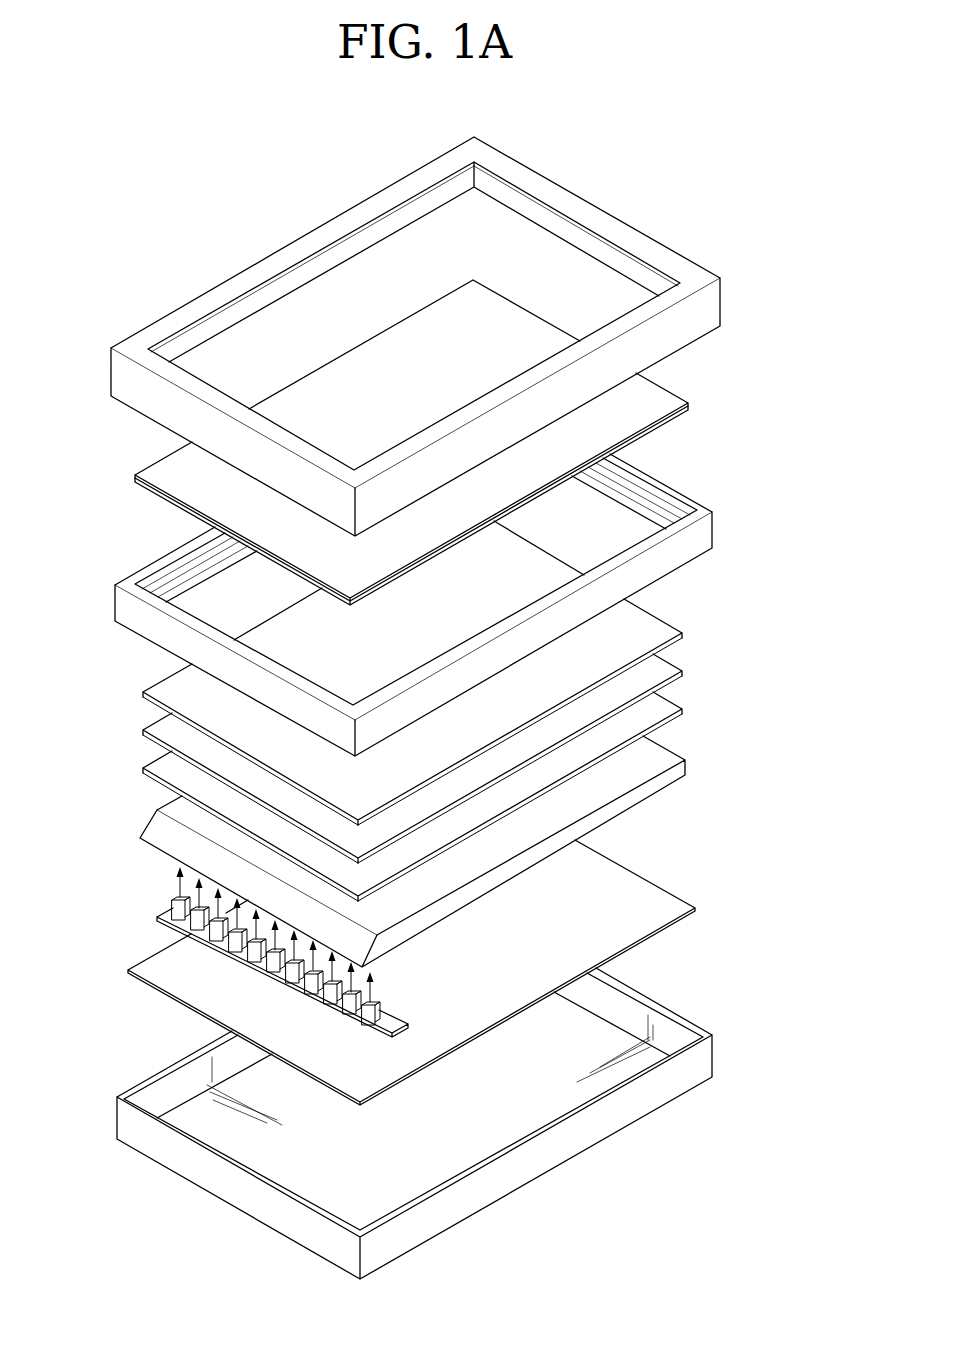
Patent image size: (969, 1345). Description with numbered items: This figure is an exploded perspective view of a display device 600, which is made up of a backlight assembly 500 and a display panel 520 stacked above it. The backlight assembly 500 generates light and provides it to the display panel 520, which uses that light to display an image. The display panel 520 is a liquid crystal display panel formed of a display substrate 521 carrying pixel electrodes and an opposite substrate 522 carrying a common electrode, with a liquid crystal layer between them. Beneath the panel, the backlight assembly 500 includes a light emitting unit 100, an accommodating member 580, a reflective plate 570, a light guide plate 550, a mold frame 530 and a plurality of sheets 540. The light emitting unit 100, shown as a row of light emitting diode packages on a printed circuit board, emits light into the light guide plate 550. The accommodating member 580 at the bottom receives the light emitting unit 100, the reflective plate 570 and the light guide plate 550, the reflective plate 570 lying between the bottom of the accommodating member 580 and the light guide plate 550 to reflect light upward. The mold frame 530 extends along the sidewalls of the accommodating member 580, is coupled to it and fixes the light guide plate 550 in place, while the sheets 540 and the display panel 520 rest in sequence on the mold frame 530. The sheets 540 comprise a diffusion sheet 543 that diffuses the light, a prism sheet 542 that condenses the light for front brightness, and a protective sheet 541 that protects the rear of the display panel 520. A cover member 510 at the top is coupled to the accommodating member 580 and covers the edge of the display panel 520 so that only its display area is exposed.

The display device 600 is at (637, 206).
The cover member 510 is at (710, 311).
The display panel 520 is at (781, 363).
The opposite substrate 522 is at (662, 398).
The display substrate 521 is at (688, 408).
The backlight assembly 500 is at (812, 528).
The mold frame 530 is at (712, 535).
The sheets 540 is at (759, 613).
The protective sheet 541 is at (663, 636).
The prism sheet 542 is at (663, 673).
The diffusion sheet 543 is at (663, 710).
The light guide plate 550 is at (667, 757).
The light emitting unit 100 is at (150, 907).
The reflective plate 570 is at (673, 902).
The accommodating member 580 is at (617, 1040).